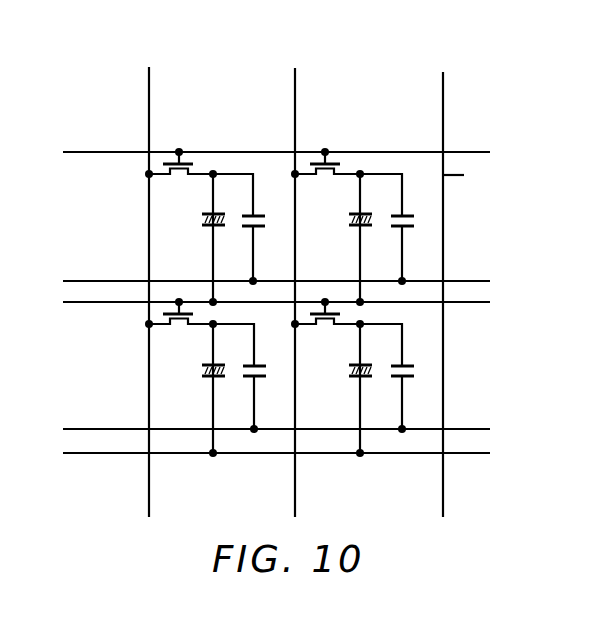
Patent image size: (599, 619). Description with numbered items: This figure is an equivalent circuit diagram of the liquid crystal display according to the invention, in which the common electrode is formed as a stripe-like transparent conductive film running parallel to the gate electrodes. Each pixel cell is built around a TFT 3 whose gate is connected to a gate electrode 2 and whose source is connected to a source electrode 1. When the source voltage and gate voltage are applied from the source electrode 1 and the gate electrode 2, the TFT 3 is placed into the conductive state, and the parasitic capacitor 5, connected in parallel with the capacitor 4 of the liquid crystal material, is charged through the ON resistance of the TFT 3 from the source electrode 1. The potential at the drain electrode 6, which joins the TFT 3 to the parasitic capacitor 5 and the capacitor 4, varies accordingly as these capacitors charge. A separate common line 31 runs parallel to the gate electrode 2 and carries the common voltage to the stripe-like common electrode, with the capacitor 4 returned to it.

The source electrode 1 is at (150, 90).
The gate electrode 2 is at (86, 151).
The common line 31 is at (86, 280).
The TFT 3 is at (183, 150).
The drain electrode 6 is at (207, 170).
The parasitic capacitor 5 is at (201, 226).
The capacitor of the liquid crystal material 4 is at (262, 228).